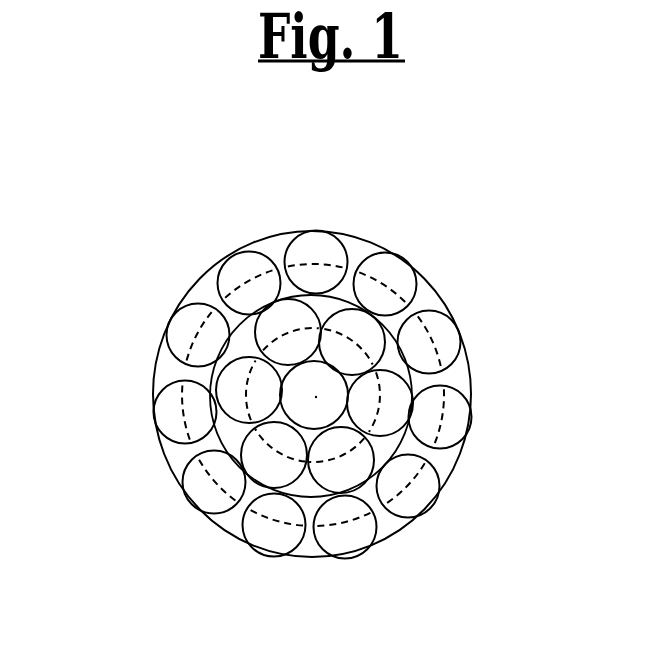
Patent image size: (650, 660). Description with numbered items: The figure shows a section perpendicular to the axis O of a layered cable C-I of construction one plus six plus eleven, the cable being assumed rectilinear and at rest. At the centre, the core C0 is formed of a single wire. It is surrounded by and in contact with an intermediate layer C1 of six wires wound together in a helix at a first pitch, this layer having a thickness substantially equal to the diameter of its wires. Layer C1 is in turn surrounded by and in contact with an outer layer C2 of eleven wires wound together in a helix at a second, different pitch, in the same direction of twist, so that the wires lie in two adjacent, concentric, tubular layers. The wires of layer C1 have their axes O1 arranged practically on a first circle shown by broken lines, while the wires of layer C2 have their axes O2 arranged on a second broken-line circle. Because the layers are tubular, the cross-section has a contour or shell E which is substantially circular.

The cable C-I is at (416, 210).
The shell E is at (472, 387).
The core C0 is at (298, 405).
The intermediate layer C1 is at (283, 327).
The outer layer C2 is at (388, 284).
The axis O is at (317, 397).
The axes of the intermediate layer wires O1 is at (273, 452).
The axes of the outer layer wires O2 is at (247, 285).